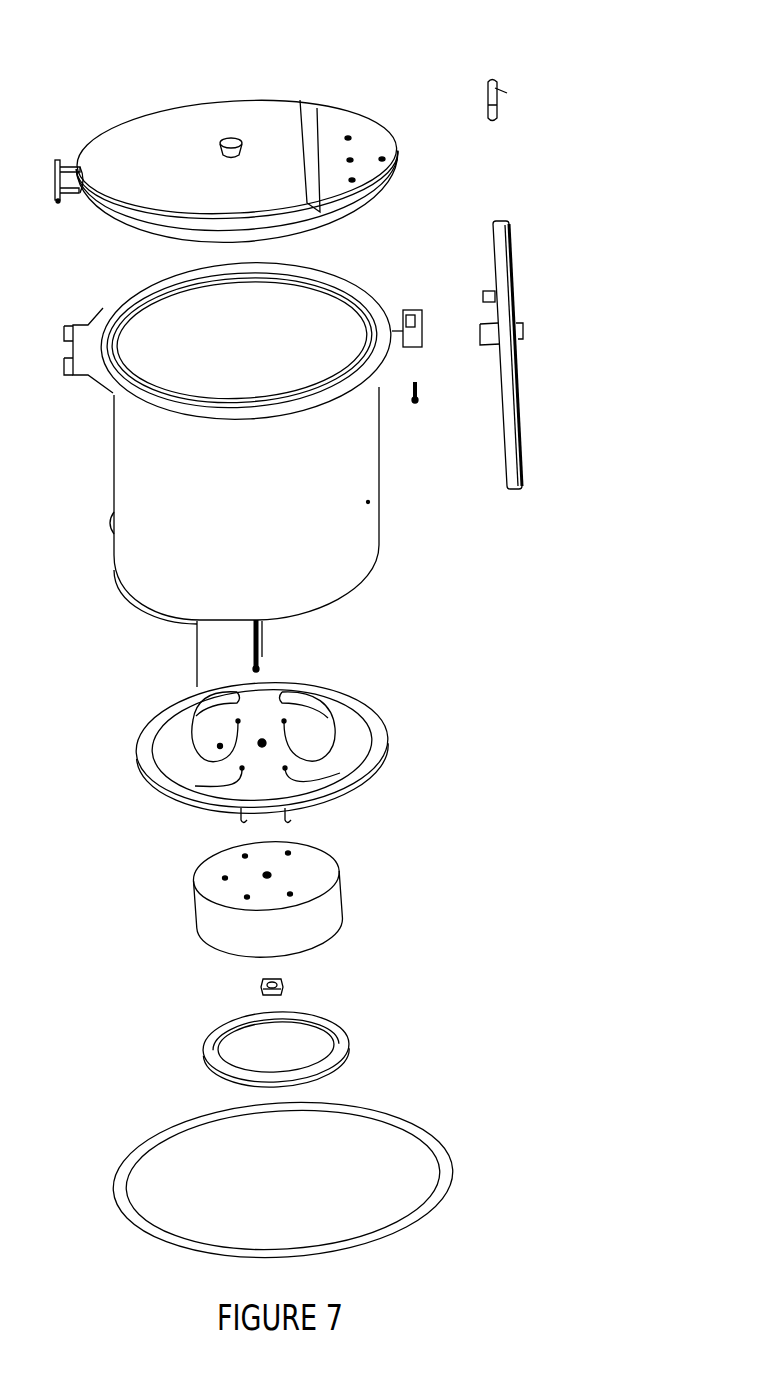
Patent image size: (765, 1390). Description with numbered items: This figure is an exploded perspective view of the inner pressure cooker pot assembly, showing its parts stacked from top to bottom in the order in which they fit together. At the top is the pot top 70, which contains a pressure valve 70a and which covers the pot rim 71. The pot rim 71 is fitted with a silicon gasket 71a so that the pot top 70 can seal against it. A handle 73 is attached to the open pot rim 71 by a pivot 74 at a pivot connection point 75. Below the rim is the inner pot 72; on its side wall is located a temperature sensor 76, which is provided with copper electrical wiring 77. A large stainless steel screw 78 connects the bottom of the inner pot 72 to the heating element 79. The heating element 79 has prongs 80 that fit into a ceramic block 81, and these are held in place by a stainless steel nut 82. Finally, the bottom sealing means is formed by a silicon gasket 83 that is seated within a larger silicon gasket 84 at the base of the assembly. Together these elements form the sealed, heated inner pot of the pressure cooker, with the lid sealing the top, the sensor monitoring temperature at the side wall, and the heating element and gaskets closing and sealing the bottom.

The pot top 70 is at (280, 97).
The pressure valve 70a is at (493, 77).
The pot rim 71 is at (98, 308).
The silicon gasket 71a is at (337, 283).
The inner pot 72 is at (373, 513).
The handle 73 is at (509, 262).
The pivot 74 is at (414, 400).
The pivot connection point 75 is at (408, 308).
The temperature sensor 76 is at (112, 527).
The copper electrical wiring 77 is at (197, 654).
The stainless steel screw 78 is at (263, 657).
The heating element 79 is at (380, 717).
The prongs 80 is at (290, 811).
The ceramic block 81 is at (342, 893).
The stainless steel nut 82 is at (285, 978).
The silicon gasket 83 is at (350, 1040).
The larger silicon gasket 84 is at (435, 1143).